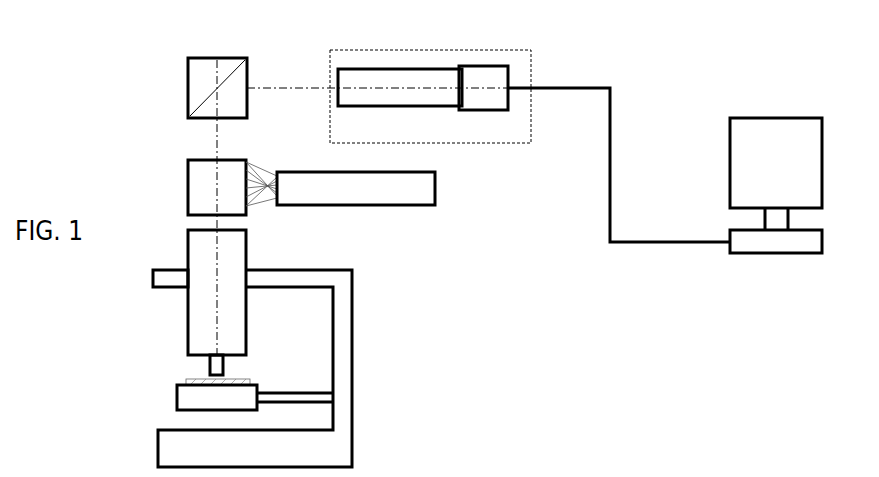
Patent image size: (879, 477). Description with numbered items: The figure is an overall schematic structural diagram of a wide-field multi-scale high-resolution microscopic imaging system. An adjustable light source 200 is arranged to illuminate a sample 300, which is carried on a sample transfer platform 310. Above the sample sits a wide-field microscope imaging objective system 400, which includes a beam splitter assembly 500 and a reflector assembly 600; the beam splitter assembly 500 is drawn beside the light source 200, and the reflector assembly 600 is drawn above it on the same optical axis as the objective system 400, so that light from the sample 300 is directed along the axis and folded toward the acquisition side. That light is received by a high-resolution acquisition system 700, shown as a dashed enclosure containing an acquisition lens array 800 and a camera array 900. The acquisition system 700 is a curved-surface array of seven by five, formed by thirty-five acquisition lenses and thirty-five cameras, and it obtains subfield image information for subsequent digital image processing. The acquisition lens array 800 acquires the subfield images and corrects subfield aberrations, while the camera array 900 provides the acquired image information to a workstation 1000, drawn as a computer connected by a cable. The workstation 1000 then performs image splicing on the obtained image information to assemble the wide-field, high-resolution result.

The adjustable light source 200 is at (377, 205).
The sample 300 is at (205, 383).
The sample transfer platform 310 is at (177, 405).
The wide-field microscope imaging objective system 400 is at (188, 335).
The beam splitter assembly 500 is at (188, 198).
The reflector assembly 600 is at (189, 101).
The high-resolution acquisition system 700 is at (418, 50).
The acquisition lens array 800 is at (409, 107).
The camera array 900 is at (480, 111).
The workstation 1000 is at (778, 118).